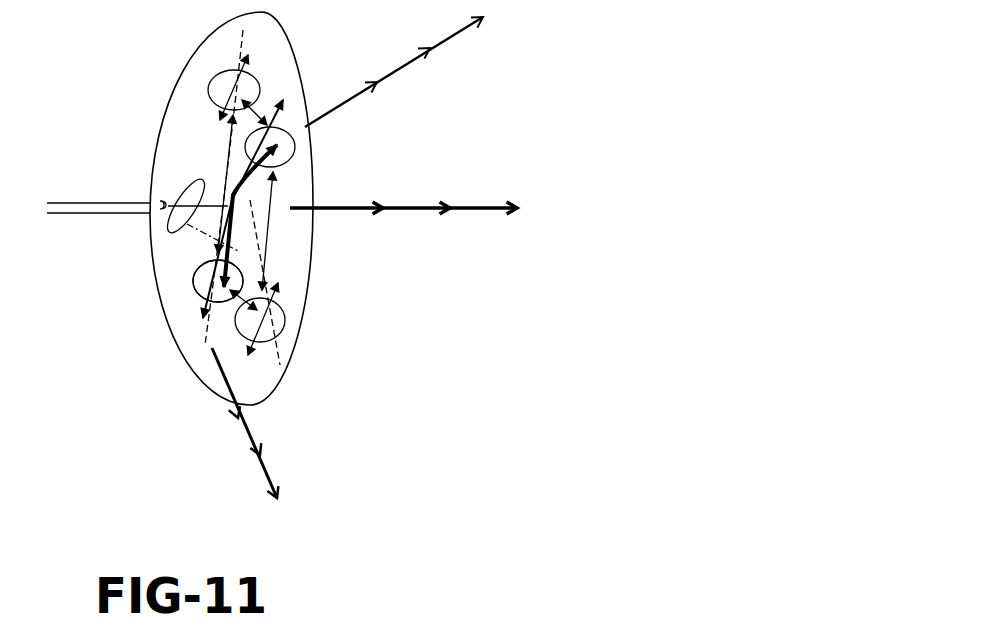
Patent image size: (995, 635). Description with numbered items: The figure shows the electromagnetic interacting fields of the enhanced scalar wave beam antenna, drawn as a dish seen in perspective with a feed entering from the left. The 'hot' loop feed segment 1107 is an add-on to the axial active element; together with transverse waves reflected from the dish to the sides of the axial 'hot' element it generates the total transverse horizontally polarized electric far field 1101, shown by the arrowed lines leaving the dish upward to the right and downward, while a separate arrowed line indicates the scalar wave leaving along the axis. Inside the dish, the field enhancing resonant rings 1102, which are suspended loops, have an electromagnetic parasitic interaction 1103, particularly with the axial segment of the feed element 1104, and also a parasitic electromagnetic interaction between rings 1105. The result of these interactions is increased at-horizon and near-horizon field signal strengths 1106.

The total transverse horizontally polarized electric far field 1101 is at (393, 72).
The field enhancing resonant rings 1102 is at (300, 324).
The electromagnetic parasitic interaction 1103 is at (272, 160).
The axial segment of the feed element 1104 is at (228, 206).
The parasitic electromagnetic interaction between rings 1105 is at (236, 158).
The increased at-horizon and near-horizon field signal strengths 1106 is at (198, 310).
The loop feed segment 1107 is at (173, 233).